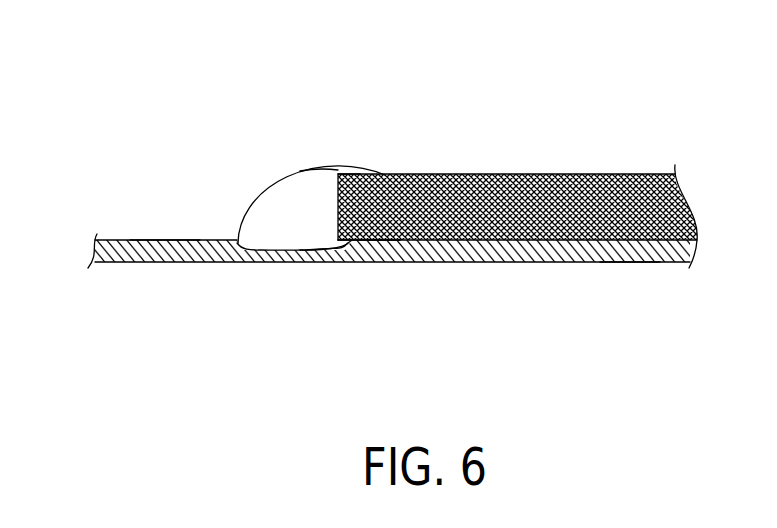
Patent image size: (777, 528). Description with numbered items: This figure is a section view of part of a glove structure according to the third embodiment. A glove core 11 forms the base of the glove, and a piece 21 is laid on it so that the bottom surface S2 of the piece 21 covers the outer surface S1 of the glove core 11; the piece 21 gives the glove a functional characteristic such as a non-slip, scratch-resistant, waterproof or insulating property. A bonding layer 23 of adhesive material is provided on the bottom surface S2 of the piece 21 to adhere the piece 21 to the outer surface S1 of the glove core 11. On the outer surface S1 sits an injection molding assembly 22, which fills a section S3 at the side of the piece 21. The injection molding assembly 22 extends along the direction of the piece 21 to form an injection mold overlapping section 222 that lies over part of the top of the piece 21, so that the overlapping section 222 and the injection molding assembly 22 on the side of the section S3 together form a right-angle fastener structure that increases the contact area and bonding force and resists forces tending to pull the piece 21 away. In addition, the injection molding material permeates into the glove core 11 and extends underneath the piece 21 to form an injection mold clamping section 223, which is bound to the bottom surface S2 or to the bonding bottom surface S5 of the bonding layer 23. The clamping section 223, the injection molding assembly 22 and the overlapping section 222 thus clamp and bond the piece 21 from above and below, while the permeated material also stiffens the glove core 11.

The glove core 11 is at (150, 255).
The piece 21 is at (553, 176).
The injection molding assembly 22 is at (277, 207).
The injection mold overlapping section 222 is at (360, 171).
The injection mold clamping section 223 is at (343, 247).
The bonding layer 23 is at (377, 242).
The outer surface S1 is at (160, 240).
The bottom surface S2 is at (632, 242).
The section S3 is at (338, 180).
The bonding bottom surface S5 is at (383, 242).